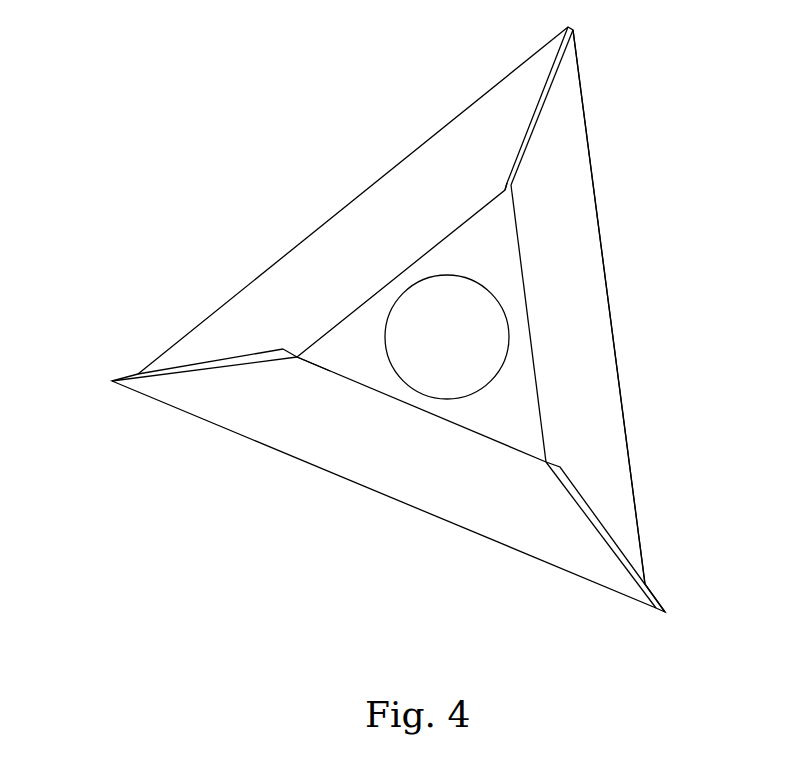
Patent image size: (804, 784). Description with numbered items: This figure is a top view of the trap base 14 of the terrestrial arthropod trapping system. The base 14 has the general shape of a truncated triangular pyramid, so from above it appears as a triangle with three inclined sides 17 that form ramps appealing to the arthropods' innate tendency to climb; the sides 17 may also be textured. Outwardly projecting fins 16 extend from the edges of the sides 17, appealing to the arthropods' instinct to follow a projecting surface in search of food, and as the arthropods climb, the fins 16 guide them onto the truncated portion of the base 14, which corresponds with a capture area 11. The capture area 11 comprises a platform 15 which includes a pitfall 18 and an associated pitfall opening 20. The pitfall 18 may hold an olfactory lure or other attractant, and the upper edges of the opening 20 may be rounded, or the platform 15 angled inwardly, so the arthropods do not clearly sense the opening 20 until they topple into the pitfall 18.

The capture area 11 is at (506, 412).
The base 14 is at (566, 298).
The platform 15 is at (485, 253).
The fins 16 is at (573, 30).
The sides 17 is at (415, 195).
The pitfall 18 is at (418, 318).
The pitfall opening 20 is at (393, 366).